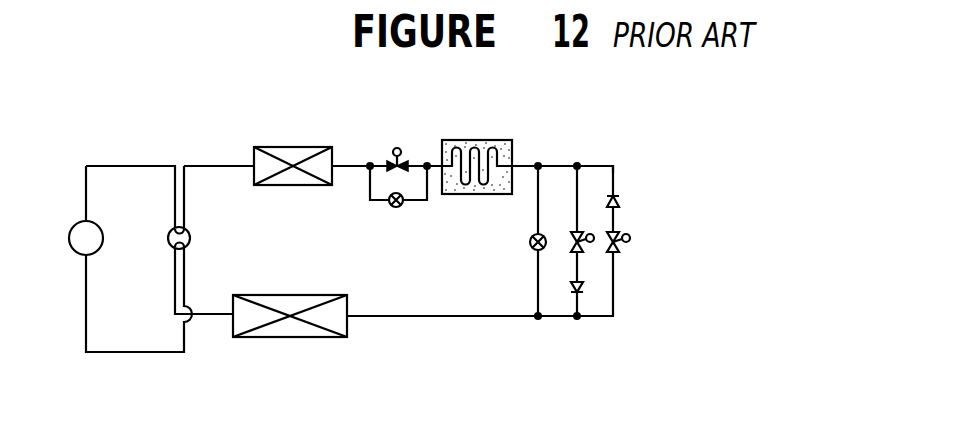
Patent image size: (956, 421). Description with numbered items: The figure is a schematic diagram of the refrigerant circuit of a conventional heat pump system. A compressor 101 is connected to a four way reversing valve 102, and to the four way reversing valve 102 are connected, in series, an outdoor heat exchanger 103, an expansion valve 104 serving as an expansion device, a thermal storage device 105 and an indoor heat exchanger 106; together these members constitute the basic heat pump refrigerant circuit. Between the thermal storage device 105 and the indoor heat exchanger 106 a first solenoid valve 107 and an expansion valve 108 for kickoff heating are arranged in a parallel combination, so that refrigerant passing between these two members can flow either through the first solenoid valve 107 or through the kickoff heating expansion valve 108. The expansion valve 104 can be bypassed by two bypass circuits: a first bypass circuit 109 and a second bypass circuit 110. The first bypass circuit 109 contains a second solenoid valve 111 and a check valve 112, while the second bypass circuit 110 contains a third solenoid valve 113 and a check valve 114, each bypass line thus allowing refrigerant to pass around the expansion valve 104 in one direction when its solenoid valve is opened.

The compressor 101 is at (103, 232).
The four way reversing valve 102 is at (190, 240).
The outdoor heat exchanger 103 is at (298, 338).
The expansion valve 104 is at (530, 241).
The thermal storage device 105 is at (477, 140).
The indoor heat exchanger 106 is at (290, 147).
The first solenoid valve 107 is at (396, 148).
The expansion valve for kickoff heating 108 is at (391, 207).
The first bypass circuit 109 is at (578, 170).
The second bypass circuit 110 is at (617, 177).
The second solenoid valve 111 is at (586, 235).
The check valve 112 is at (582, 286).
The third solenoid valve 113 is at (628, 244).
The check valve 114 is at (618, 197).